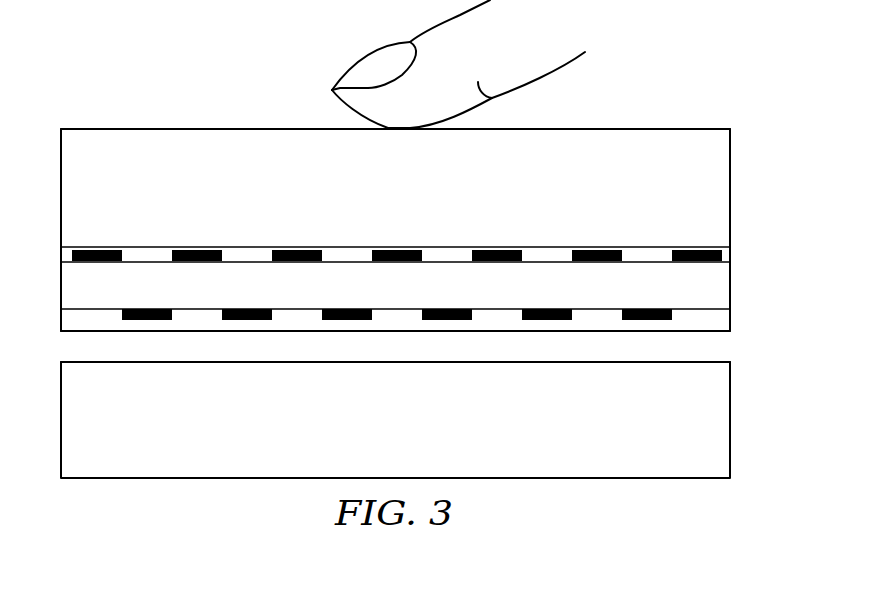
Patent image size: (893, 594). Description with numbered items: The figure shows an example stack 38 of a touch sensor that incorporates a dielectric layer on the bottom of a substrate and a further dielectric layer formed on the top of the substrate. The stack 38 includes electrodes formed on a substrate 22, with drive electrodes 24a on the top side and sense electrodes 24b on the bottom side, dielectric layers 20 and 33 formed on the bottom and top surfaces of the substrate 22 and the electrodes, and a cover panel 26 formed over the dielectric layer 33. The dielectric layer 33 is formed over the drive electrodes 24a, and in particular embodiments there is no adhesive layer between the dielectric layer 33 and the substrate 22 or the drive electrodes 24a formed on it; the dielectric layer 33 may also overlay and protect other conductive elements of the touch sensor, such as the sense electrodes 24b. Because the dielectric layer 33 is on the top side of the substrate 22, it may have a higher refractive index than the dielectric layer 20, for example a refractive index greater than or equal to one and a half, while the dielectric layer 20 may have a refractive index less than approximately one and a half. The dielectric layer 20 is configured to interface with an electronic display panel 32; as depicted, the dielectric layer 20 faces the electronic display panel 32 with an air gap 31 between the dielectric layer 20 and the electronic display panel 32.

The dielectric layer 20 is at (718, 317).
The substrate 22 is at (718, 285).
The drive electrodes 24a is at (697, 250).
The sense electrodes 24b is at (644, 320).
The cover panel 26 is at (718, 190).
The air gap 31 is at (718, 347).
The electronic display panel 32 is at (718, 435).
The dielectric layer 33 is at (645, 253).
The stack 38 is at (50, 129).